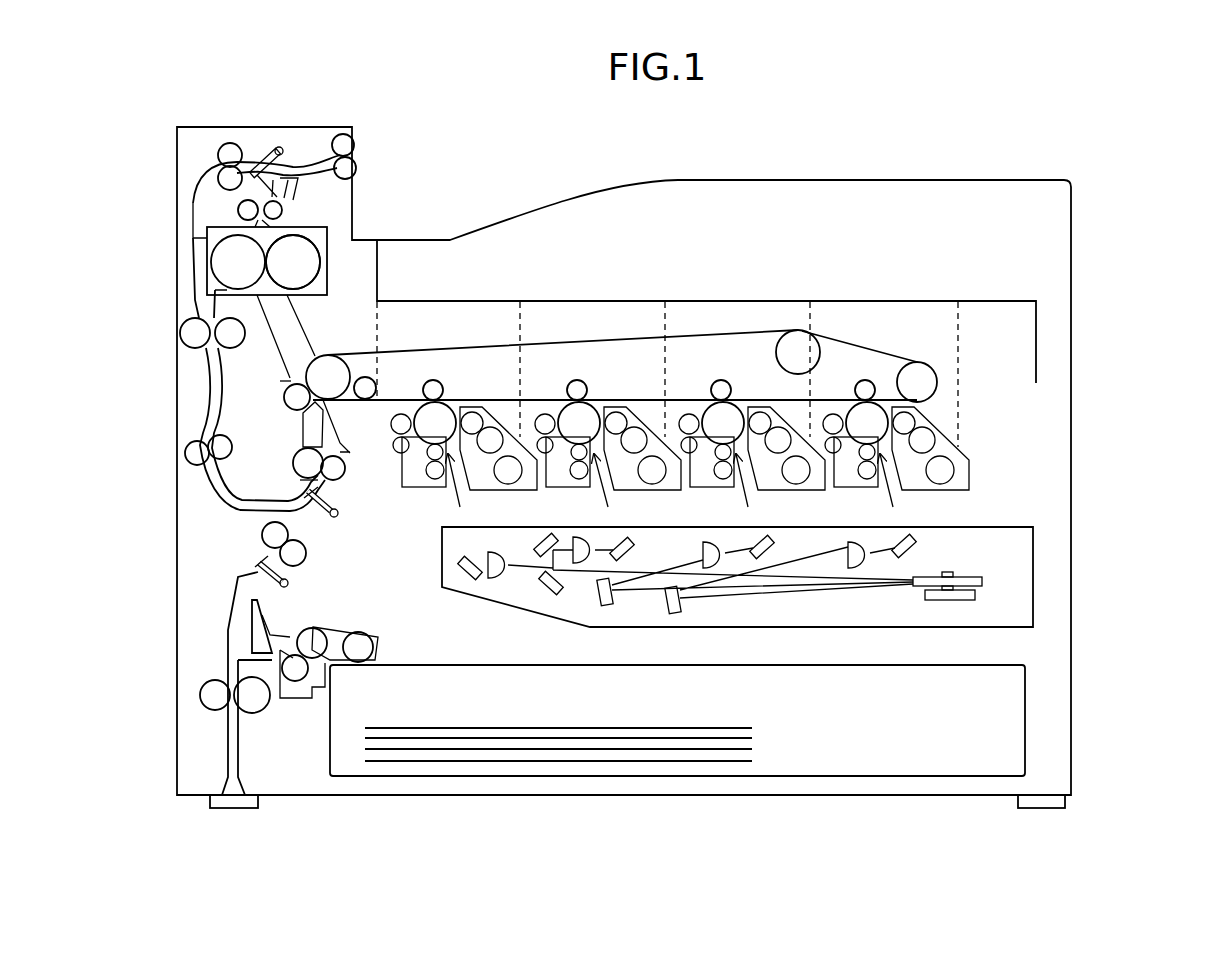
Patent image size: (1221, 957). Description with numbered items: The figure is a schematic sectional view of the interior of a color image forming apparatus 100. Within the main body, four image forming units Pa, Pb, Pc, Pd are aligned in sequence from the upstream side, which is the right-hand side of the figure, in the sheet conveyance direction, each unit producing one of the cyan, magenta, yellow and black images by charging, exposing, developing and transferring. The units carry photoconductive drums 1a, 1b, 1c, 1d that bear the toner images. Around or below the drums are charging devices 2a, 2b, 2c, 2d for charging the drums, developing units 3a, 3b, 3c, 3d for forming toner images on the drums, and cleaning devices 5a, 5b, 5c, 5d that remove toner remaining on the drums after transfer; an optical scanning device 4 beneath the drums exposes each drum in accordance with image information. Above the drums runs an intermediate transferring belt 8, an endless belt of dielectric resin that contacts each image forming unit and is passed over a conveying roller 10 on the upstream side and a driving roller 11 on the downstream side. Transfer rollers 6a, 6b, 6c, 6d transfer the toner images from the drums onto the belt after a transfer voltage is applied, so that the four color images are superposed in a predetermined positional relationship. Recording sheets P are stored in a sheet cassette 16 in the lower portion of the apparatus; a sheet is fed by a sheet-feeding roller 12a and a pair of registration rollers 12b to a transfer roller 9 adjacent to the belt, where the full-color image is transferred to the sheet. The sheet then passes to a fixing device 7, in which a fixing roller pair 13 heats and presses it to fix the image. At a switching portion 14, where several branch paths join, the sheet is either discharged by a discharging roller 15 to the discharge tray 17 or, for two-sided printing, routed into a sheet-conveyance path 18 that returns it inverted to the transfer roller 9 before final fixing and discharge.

The color image forming apparatus 100 is at (1083, 322).
The discharge tray 17 is at (568, 197).
The fixing roller pair 13 is at (237, 267).
The fixing device 7 is at (330, 262).
The switching portion 14 is at (267, 178).
The discharging roller 15 is at (353, 157).
The sheet-conveyance path 18 is at (207, 367).
The driving roller 11 is at (333, 372).
The transfer roller 9 is at (293, 401).
The intermediate transferring belt 8 is at (852, 343).
The conveying roller 10 is at (932, 380).
The transfer roller 6a is at (862, 386).
The transfer roller 6b is at (717, 386).
The transfer roller 6c is at (574, 387).
The transfer roller 6d is at (430, 386).
The photoconductive drum 1a is at (867, 440).
The photoconductive drum 1b is at (723, 440).
The photoconductive drum 1c is at (579, 440).
The photoconductive drum 1d is at (435, 440).
The cleaning device 5a is at (830, 451).
The cleaning device 5b is at (686, 452).
The cleaning device 5c is at (533, 450).
The cleaning device 5d is at (399, 433).
The charging device 2a is at (862, 477).
The charging device 2b is at (717, 478).
The charging device 2c is at (575, 478).
The charging device 2d is at (432, 476).
The developing unit 3a is at (970, 455).
The developing unit 3b is at (778, 417).
The developing unit 3c is at (633, 418).
The developing unit 3d is at (493, 418).
The sheet-feeding roller 12a is at (362, 640).
The registration rollers 12b is at (340, 478).
The sheet cassette 16 is at (1025, 718).
The recording sheet P is at (648, 727).
The optical scanning device 4 is at (1037, 567).
The image forming unit Pa is at (955, 320).
The image forming unit Pb is at (807, 320).
The image forming unit Pc is at (662, 320).
The image forming unit Pd is at (517, 320).